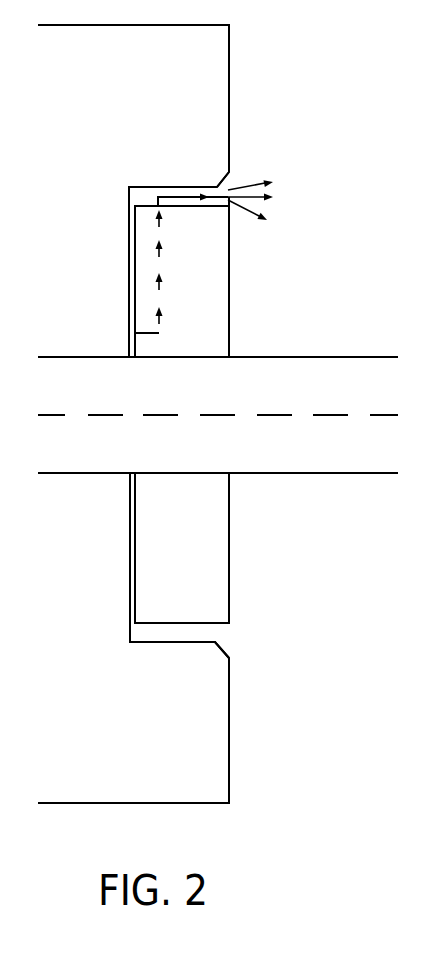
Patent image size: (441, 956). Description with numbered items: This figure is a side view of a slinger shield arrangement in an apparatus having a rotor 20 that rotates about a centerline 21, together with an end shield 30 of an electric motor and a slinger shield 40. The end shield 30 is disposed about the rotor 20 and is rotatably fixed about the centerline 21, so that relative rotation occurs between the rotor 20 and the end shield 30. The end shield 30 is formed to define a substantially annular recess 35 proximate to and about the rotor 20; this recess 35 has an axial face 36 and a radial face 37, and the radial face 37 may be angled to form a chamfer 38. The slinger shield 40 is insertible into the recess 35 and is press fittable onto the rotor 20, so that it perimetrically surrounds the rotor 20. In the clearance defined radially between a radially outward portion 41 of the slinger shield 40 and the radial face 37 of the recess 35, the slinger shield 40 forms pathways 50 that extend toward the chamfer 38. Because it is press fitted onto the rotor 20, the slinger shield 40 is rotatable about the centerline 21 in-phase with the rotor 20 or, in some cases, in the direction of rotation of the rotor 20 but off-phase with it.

The rotor 20 is at (312, 473).
The centerline 21 is at (315, 415).
The end shield 30 is at (220, 743).
The annular recess 35 is at (130, 217).
The axial face 36 is at (130, 540).
The radial face 37 is at (168, 643).
The chamfer 38 is at (221, 183).
The slinger shield 40 is at (230, 272).
The radially outward portion 41 is at (198, 215).
The pathways 50 is at (173, 195).